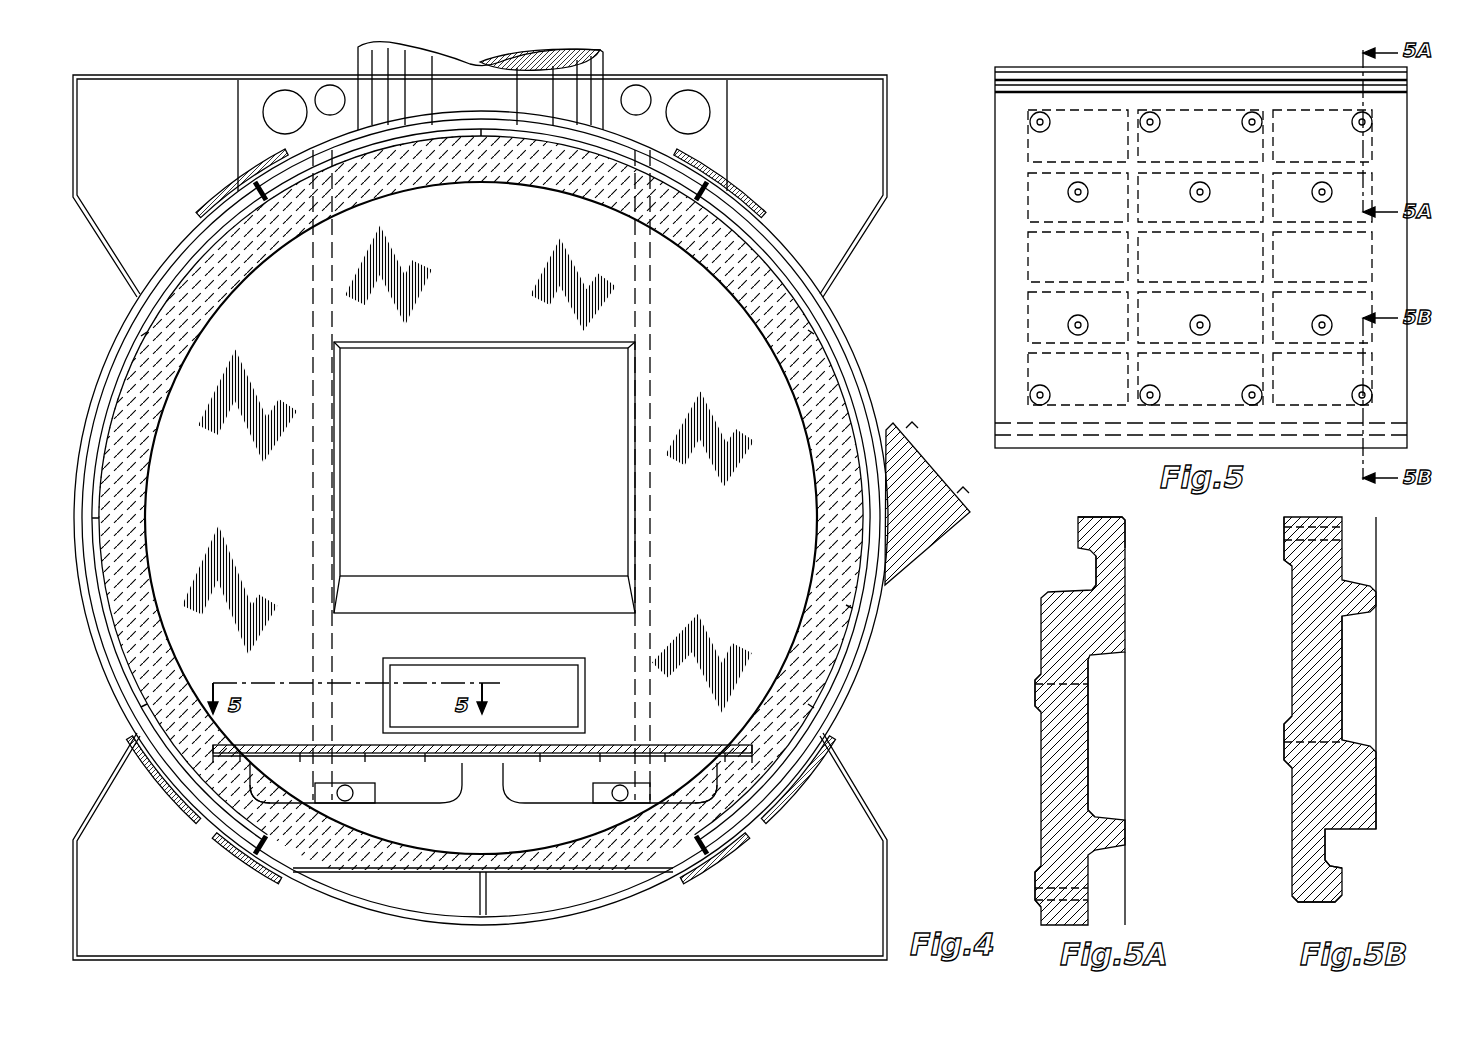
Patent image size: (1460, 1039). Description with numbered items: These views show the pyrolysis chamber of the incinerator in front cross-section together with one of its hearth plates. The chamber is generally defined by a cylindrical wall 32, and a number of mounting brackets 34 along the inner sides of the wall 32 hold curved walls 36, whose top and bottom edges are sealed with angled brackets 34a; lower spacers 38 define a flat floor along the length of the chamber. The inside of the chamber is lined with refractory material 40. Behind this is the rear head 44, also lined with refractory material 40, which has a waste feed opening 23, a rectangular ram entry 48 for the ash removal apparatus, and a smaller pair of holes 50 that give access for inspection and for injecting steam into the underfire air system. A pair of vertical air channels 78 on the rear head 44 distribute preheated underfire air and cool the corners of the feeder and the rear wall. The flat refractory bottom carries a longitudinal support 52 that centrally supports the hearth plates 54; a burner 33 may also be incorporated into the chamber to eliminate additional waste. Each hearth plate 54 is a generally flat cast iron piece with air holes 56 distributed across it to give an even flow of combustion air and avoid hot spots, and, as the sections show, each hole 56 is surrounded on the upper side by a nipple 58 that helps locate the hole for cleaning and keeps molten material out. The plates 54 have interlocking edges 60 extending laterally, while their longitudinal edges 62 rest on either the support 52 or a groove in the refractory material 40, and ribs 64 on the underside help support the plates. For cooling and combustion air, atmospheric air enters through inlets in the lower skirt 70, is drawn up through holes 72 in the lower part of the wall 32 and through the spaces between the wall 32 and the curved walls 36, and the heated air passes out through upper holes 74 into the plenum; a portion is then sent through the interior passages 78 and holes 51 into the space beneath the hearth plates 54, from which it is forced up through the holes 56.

In FIG. 4, the waste feed opening 23 is at (342, 428).
In FIG. 4, the cylindrical wall 32 is at (853, 376).
In FIG. 4, the burner 33 is at (905, 560).
In FIG. 4, the mounting brackets 34 is at (820, 318).
In FIG. 4, the angled brackets 34a is at (258, 176).
In FIG. 4, the curved walls 36 is at (843, 345).
In FIG. 4, the lower spacers 38 is at (410, 872).
In FIG. 4, the refractory material 40 is at (385, 200).
In FIG. 4, the rear head 44 is at (716, 390).
In FIG. 4, the ram entry 48 is at (568, 680).
In FIG. 4, the pair of holes 50 is at (355, 790).
In FIG. 4, the holes 51 is at (310, 795).
In FIG. 4, the longitudinal support 52 is at (505, 785).
In FIG. 4, the hearth plate 54 is at (318, 745).
In FIG. 5, the hearth plate 54 is at (995, 206).
In FIG. 5A, the hearth plate 54 is at (1080, 721).
In FIG. 5B, the hearth plate 54 is at (1330, 709).
In FIG. 4, the air holes 56 is at (280, 745).
In FIG. 5, the air holes 56 is at (1322, 182).
In FIG. 5A, the air holes 56 is at (1035, 688).
In FIG. 5B, the air holes 56 is at (1286, 524).
In FIG. 5, the nipple 58 is at (1078, 182).
In FIG. 5A, the nipple 58 is at (1036, 670).
In FIG. 5B, the nipple 58 is at (1286, 560).
In FIG. 5, the interlocking edges 60 is at (995, 86).
In FIG. 5A, the interlocking edges 60 is at (1090, 570).
In FIG. 5B, the interlocking edges 60 is at (1330, 858).
In FIG. 5, the longitudinal edges 62 is at (995, 260).
In FIG. 5A, the longitudinal edges 62 is at (1082, 515).
In FIG. 5B, the longitudinal edges 62 is at (1300, 902).
In FIG. 5, the ribs 64 is at (1150, 255).
In FIG. 5A, the ribs 64 is at (1110, 812).
In FIG. 5B, the ribs 64 is at (1370, 612).
In FIG. 4, the lower skirt 70 is at (892, 892).
In FIG. 4, the holes 72 is at (188, 803).
In FIG. 4, the upper holes 74 is at (178, 255).
In FIG. 4, the vertical air channels 78 is at (310, 340).